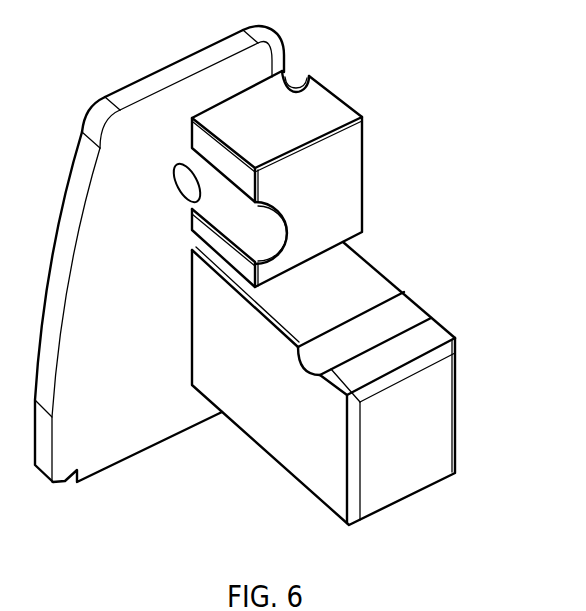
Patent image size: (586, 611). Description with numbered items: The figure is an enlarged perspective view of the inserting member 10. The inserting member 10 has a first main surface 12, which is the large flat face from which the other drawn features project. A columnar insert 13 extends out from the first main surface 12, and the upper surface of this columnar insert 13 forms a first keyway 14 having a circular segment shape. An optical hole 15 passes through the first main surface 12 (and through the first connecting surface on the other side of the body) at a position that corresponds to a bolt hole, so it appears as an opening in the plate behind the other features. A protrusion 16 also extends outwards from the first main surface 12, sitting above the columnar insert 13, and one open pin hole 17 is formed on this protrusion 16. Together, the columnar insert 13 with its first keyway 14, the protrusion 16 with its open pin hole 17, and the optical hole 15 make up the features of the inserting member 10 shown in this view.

The inserting member 10 is at (458, 191).
The first main surface 12 is at (120, 413).
The columnar insert 13 is at (308, 448).
The first keyway 14 is at (403, 317).
The optical hole 15 is at (183, 192).
The protrusion 16 is at (316, 151).
The open pin hole 17 is at (296, 88).